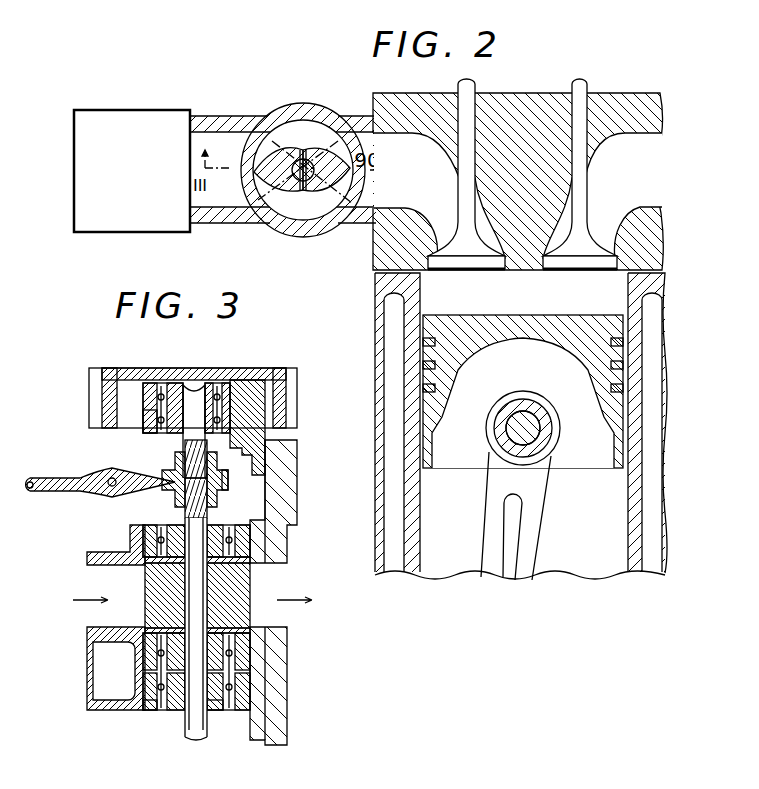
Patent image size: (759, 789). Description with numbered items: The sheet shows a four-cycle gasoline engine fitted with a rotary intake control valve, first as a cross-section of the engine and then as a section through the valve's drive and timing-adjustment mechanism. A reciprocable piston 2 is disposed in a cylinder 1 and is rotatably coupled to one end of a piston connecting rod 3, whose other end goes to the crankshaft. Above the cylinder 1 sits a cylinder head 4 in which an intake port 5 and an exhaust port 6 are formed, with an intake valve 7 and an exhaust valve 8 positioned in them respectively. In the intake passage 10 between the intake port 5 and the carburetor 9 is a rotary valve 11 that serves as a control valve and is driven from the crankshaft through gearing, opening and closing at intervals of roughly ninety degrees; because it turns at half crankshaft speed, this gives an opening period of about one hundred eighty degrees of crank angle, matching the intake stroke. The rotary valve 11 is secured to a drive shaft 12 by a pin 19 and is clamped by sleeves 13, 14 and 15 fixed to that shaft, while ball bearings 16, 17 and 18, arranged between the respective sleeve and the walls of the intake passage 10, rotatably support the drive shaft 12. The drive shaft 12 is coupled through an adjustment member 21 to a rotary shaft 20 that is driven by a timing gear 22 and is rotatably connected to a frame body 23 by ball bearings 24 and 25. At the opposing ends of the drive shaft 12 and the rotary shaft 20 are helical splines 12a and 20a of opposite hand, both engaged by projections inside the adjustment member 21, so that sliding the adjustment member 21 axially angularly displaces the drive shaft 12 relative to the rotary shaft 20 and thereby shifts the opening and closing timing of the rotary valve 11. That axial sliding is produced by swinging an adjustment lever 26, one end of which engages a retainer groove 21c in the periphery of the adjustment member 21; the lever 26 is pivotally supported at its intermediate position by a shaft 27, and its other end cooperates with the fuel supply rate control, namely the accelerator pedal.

In FIG. 2, the cylinder 1 is at (412, 370).
In FIG. 2, the piston 2 is at (428, 332).
In FIG. 2, the piston connecting rod 3 is at (487, 563).
In FIG. 2, the cylinder head 4 is at (380, 262).
In FIG. 2, the intake port 5 is at (443, 242).
In FIG. 2, the exhaust port 6 is at (636, 248).
In FIG. 2, the intake valve 7 is at (468, 195).
In FIG. 2, the exhaust valve 8 is at (575, 188).
In FIG. 2, the carburetor 9 is at (138, 129).
In FIG. 2, the intake passage 10 is at (205, 120).
In FIG. 3, the intake passage 10 is at (90, 637).
In FIG. 2, the rotary valve 11 is at (292, 188).
In FIG. 3, the rotary valve 11 is at (152, 585).
In FIG. 2, the drive shaft 12 is at (315, 152).
In FIG. 3, the drive shaft 12 is at (193, 642).
In FIG. 3, the helical spline 12a is at (190, 505).
In FIG. 3, the sleeve 13 is at (245, 548).
In FIG. 3, the sleeve 14 is at (247, 640).
In FIG. 3, the sleeve 15 is at (175, 710).
In FIG. 3, the ball bearing 16 is at (250, 537).
In FIG. 3, the ball bearing 17 is at (250, 656).
In FIG. 3, the ball bearing 18 is at (222, 710).
In FIG. 2, the pin 19 is at (310, 196).
In FIG. 3, the pin 19 is at (202, 592).
In FIG. 3, the rotary shaft 20 is at (183, 432).
In FIG. 3, the helical spline 20a is at (228, 460).
In FIG. 3, the adjustment member 21 is at (230, 482).
In FIG. 3, the retainer groove 21c is at (230, 482).
In FIG. 3, the timing gear 22 is at (250, 372).
In FIG. 3, the frame body 23 is at (258, 454).
In FIG. 3, the ball bearing 24 is at (155, 383).
In FIG. 3, the ball bearing 25 is at (150, 424).
In FIG. 3, the adjustment lever 26 is at (55, 478).
In FIG. 3, the shaft 27 is at (107, 477).